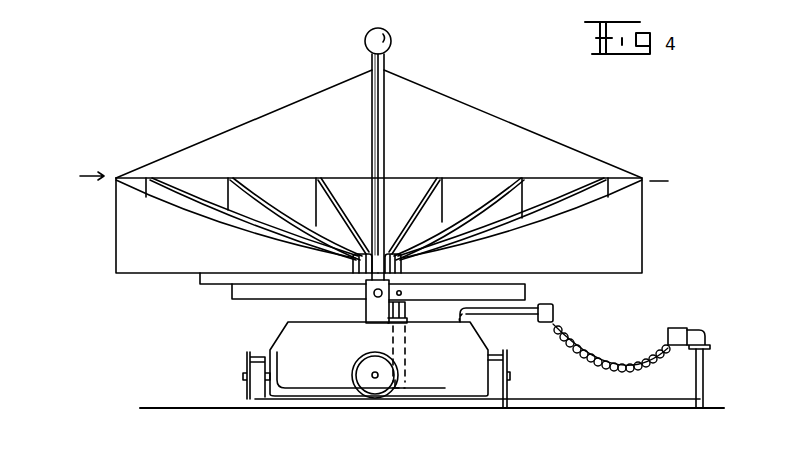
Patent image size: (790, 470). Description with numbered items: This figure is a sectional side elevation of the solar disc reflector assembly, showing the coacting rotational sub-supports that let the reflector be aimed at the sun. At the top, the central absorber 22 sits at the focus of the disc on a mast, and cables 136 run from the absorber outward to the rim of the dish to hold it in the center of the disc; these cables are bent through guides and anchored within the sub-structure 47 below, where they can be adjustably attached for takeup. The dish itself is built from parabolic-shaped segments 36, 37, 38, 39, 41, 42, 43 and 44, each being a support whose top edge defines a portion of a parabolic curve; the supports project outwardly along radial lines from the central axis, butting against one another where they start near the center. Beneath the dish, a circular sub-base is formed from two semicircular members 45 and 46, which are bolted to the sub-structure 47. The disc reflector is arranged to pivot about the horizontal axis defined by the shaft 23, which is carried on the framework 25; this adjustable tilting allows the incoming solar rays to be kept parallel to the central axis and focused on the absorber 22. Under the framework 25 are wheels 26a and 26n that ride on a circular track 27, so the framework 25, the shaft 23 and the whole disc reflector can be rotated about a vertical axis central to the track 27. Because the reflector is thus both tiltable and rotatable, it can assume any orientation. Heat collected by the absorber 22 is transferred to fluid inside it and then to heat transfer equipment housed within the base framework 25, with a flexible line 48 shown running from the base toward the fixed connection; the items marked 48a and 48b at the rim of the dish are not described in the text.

The absorber 22 is at (390, 34).
The cable 136 is at (470, 110).
The parabolic-shaped segment 36 is at (126, 220).
The parabolic-shaped segment 44 is at (631, 247).
The parabolic-shaped segment 37 is at (155, 196).
The parabolic-shaped segment 38 is at (240, 206).
The parabolic-shaped segment 39 is at (322, 206).
The parabolic-shaped segment 41 is at (434, 202).
The parabolic-shaped segment 42 is at (515, 198).
The parabolic-shaped segment 43 is at (597, 198).
The axis direction arrow 48a is at (73, 178).
The axis direction arrow 48b is at (682, 187).
The semicircular member 45 is at (211, 278).
The sub-structure 47 is at (250, 290).
The semicircular member 46 is at (548, 275).
The shaft 23 is at (374, 297).
The framework 25 is at (324, 364).
The circular track 27 is at (303, 403).
The wheel 26a is at (257, 388).
The wheel 26n is at (496, 390).
The electrical cable 48 is at (610, 356).